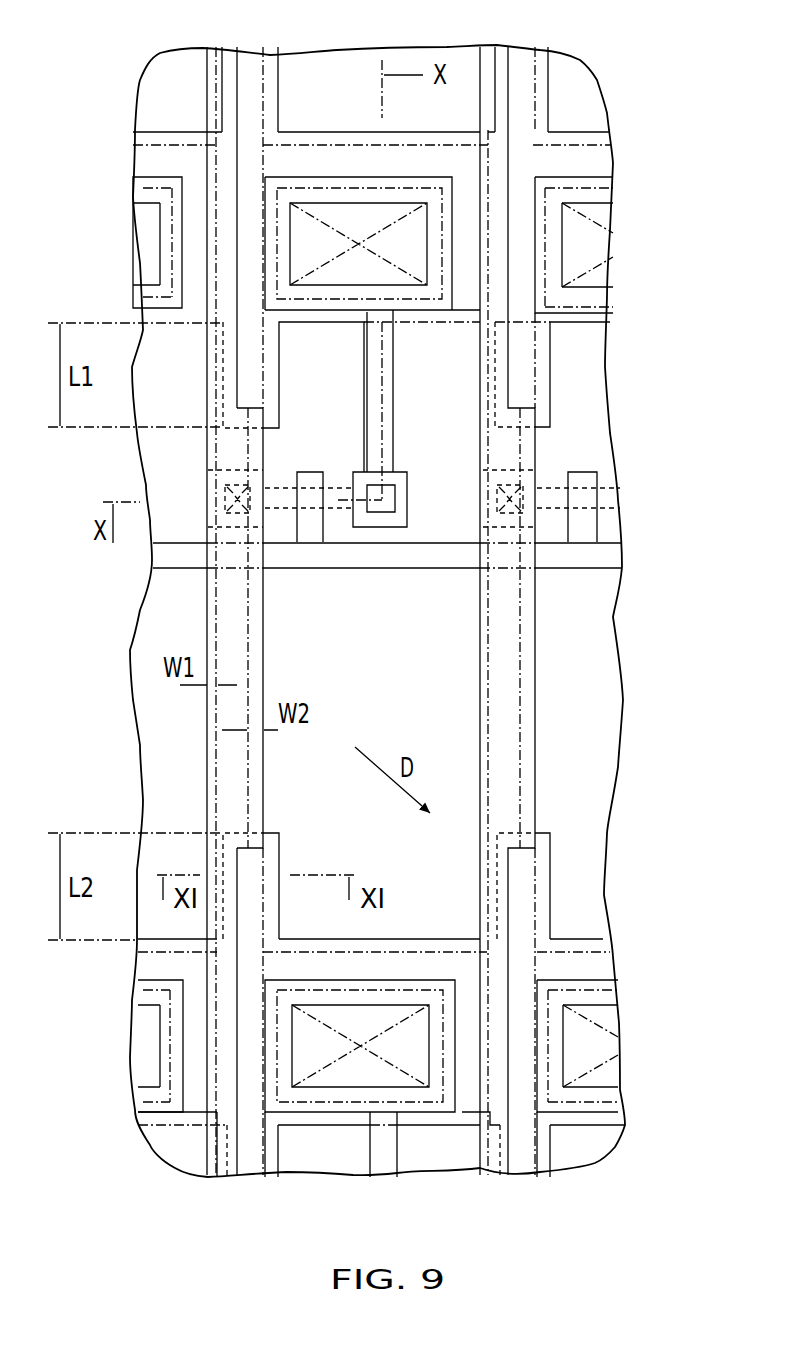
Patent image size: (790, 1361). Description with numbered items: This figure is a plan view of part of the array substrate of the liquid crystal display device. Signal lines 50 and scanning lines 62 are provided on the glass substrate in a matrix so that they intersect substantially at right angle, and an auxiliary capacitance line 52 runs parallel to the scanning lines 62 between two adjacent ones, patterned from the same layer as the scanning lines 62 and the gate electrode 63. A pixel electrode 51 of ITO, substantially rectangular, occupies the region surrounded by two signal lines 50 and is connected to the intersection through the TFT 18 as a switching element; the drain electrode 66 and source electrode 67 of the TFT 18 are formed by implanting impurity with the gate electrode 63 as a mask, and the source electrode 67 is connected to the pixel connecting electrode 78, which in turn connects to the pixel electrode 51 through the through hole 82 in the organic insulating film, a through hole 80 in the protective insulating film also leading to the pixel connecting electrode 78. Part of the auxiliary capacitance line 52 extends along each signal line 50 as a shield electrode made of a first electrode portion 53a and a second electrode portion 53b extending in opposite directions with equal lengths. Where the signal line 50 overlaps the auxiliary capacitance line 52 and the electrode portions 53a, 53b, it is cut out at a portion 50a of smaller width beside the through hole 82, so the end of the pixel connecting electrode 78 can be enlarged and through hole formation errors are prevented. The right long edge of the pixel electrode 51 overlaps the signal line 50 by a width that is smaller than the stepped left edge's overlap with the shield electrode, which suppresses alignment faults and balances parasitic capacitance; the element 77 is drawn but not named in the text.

The TFT 18 is at (337, 473).
The signal line 50 is at (258, 630).
The cut out portion 50a is at (237, 155).
The pixel electrode 51 is at (160, 85).
The auxiliary capacitance line 52 is at (607, 162).
The first electrode portion 53a is at (279, 368).
The second electrode portion 53b is at (280, 858).
The scanning line 62 is at (590, 562).
The gate electrode 63 is at (300, 481).
The drain electrode 66 is at (227, 503).
The source electrode 67 is at (398, 510).
The contact hole 77 is at (390, 502).
The pixel connecting electrode 78 is at (393, 410).
The through hole 80 is at (397, 190).
The through hole 82 is at (368, 207).